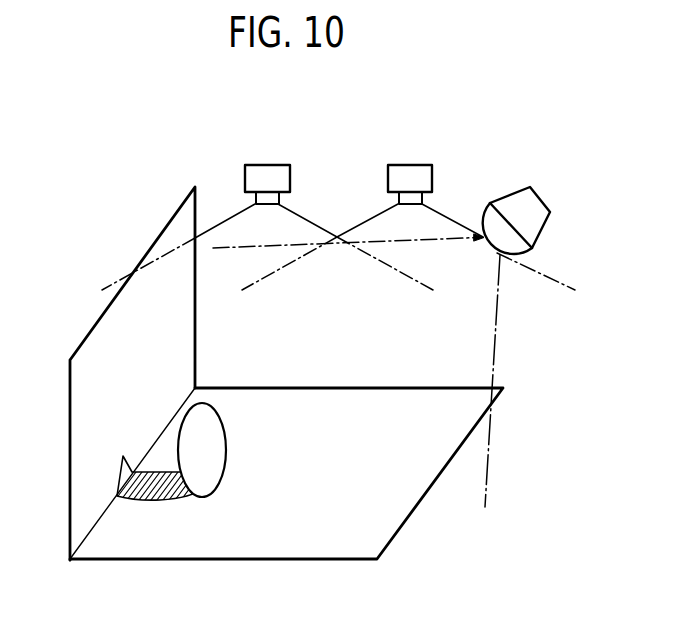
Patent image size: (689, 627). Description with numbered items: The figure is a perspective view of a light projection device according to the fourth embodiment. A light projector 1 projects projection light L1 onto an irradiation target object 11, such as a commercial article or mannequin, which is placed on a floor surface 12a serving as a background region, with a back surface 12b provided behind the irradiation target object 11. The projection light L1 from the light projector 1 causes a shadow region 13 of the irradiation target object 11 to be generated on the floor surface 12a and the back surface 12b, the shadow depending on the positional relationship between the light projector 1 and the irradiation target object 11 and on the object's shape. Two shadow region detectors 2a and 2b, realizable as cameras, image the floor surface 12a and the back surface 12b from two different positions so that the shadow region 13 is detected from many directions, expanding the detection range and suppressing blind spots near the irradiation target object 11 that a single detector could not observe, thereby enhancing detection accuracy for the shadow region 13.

The light projector 1 is at (544, 226).
The shadow region detector 2a is at (362, 210).
The shadow region detector 2b is at (267, 210).
The irradiation target object 11 is at (215, 433).
The floor surface 12a is at (286, 448).
The back surface 12b is at (179, 373).
The shadow region 13 is at (157, 502).
The projection light L1 is at (497, 341).